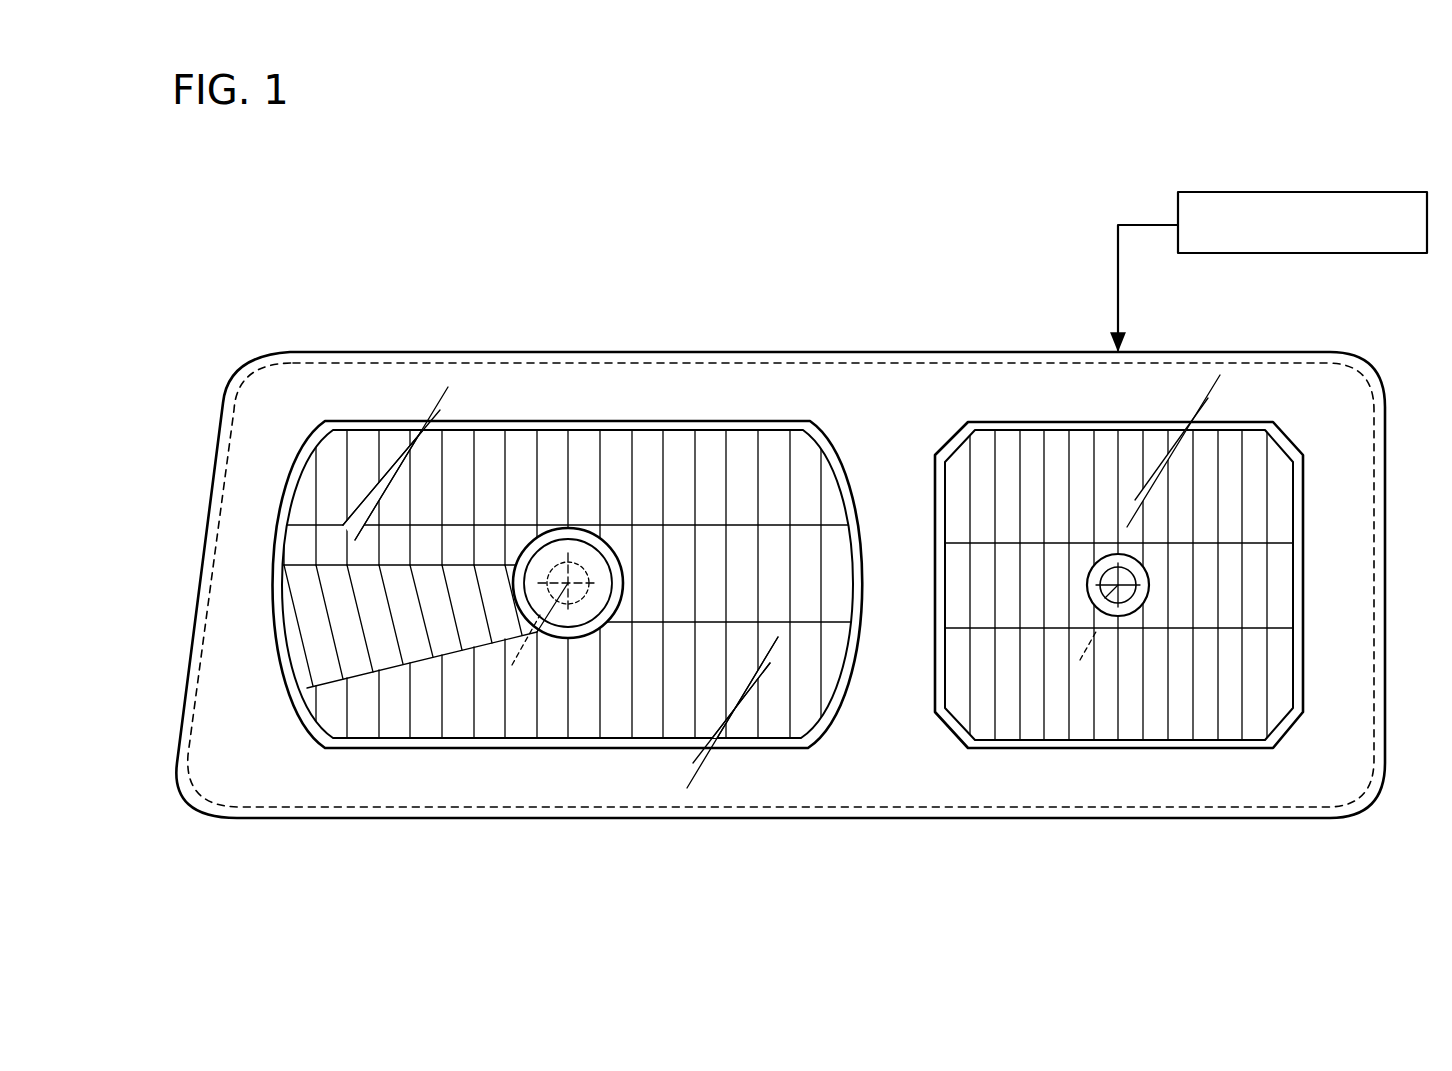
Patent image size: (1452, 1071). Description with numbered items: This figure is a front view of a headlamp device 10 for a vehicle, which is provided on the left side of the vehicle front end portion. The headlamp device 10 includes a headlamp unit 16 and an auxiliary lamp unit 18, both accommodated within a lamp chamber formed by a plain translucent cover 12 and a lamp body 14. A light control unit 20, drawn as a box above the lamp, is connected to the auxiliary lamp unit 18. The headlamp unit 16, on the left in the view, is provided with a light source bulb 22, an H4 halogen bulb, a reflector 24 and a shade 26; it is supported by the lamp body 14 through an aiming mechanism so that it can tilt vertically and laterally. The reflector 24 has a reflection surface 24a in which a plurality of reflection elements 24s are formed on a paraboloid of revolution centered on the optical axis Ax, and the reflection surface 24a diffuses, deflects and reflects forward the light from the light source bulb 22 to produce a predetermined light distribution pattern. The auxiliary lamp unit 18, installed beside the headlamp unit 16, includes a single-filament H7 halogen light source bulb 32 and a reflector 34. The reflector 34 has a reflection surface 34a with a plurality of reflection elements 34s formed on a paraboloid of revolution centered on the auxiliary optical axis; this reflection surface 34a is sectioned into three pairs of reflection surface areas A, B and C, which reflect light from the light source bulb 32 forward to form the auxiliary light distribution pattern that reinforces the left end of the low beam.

The headlamp device 10 is at (780, 498).
The translucent cover 12 is at (752, 385).
The lamp body 14 is at (917, 350).
The headlamp unit 16 is at (601, 592).
The auxiliary lamp unit 18 is at (1154, 602).
The light control unit 20 is at (1305, 192).
The light source bulb 22 is at (585, 565).
The reflector 24 is at (640, 752).
The reflection surface 24a is at (800, 485).
The reflection elements 24s is at (422, 645).
The shade 26 is at (620, 595).
The light source bulb 32 is at (1138, 565).
The reflector 34 is at (1190, 757).
The reflection surface 34a is at (1230, 497).
The reflection elements 34s is at (1130, 723).